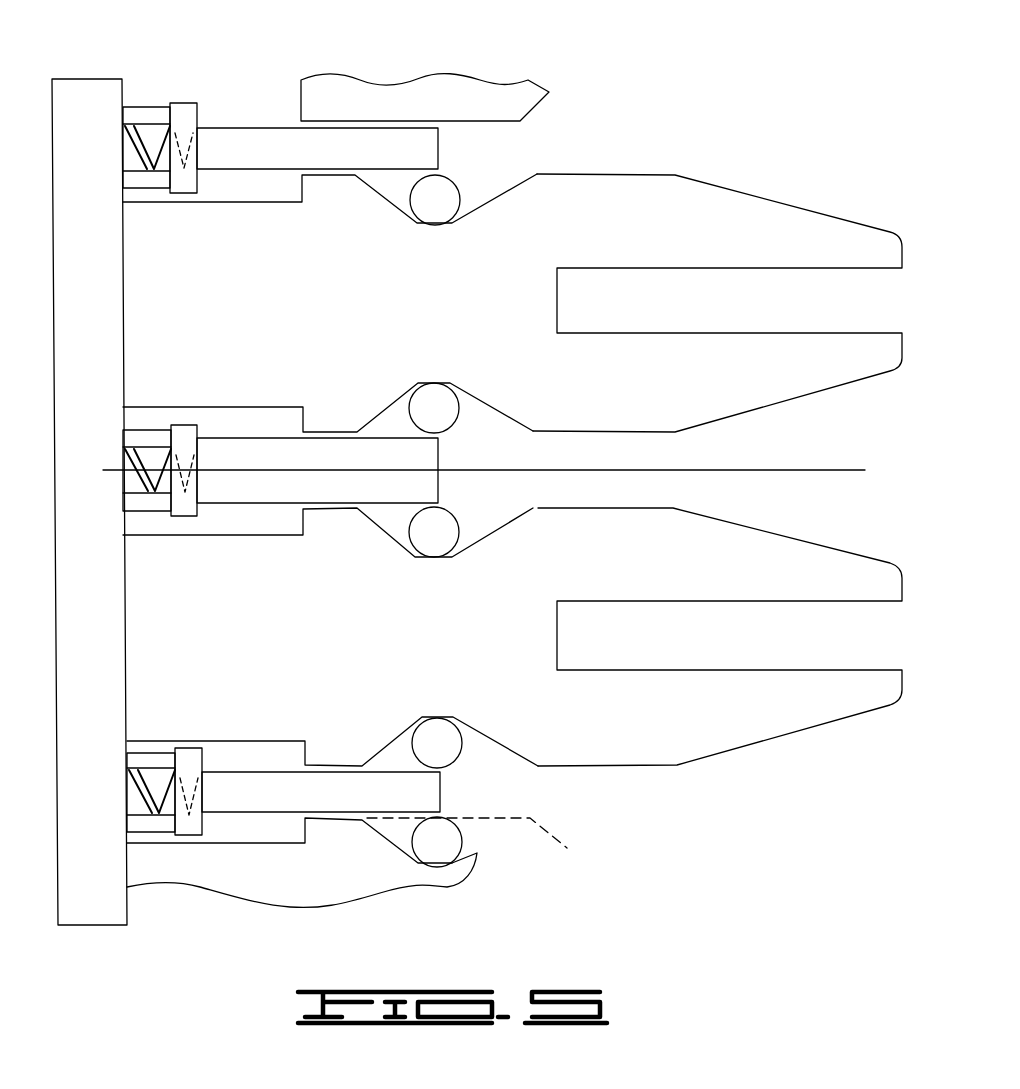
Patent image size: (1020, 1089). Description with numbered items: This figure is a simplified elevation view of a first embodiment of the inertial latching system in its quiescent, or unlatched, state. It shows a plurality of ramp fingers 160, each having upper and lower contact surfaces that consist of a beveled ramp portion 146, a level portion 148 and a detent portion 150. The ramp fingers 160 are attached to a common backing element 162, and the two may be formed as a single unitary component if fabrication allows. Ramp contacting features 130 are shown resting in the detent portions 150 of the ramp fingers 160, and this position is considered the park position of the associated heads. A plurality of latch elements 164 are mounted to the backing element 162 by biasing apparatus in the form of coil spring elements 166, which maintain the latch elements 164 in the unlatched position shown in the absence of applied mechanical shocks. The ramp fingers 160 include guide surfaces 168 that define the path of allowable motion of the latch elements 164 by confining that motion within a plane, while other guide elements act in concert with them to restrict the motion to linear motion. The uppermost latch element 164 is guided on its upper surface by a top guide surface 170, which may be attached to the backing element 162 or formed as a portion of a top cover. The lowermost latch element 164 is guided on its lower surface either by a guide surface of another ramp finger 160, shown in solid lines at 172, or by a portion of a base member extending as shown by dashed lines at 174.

The ramp contacting feature 130 is at (438, 202).
The beveled ramp portion 146 is at (760, 197).
The level portion 148 is at (605, 765).
The detent portion 150 is at (437, 718).
The ramp finger 160 is at (249, 283).
The backing element 162 is at (92, 100).
The latch element 164 is at (253, 792).
The coil spring element 166 is at (153, 450).
The guide surface 168 is at (330, 510).
The top guide surface 170 is at (378, 120).
The guide surface of another ramp finger 172 is at (333, 818).
The base member guide surface 174 is at (493, 820).